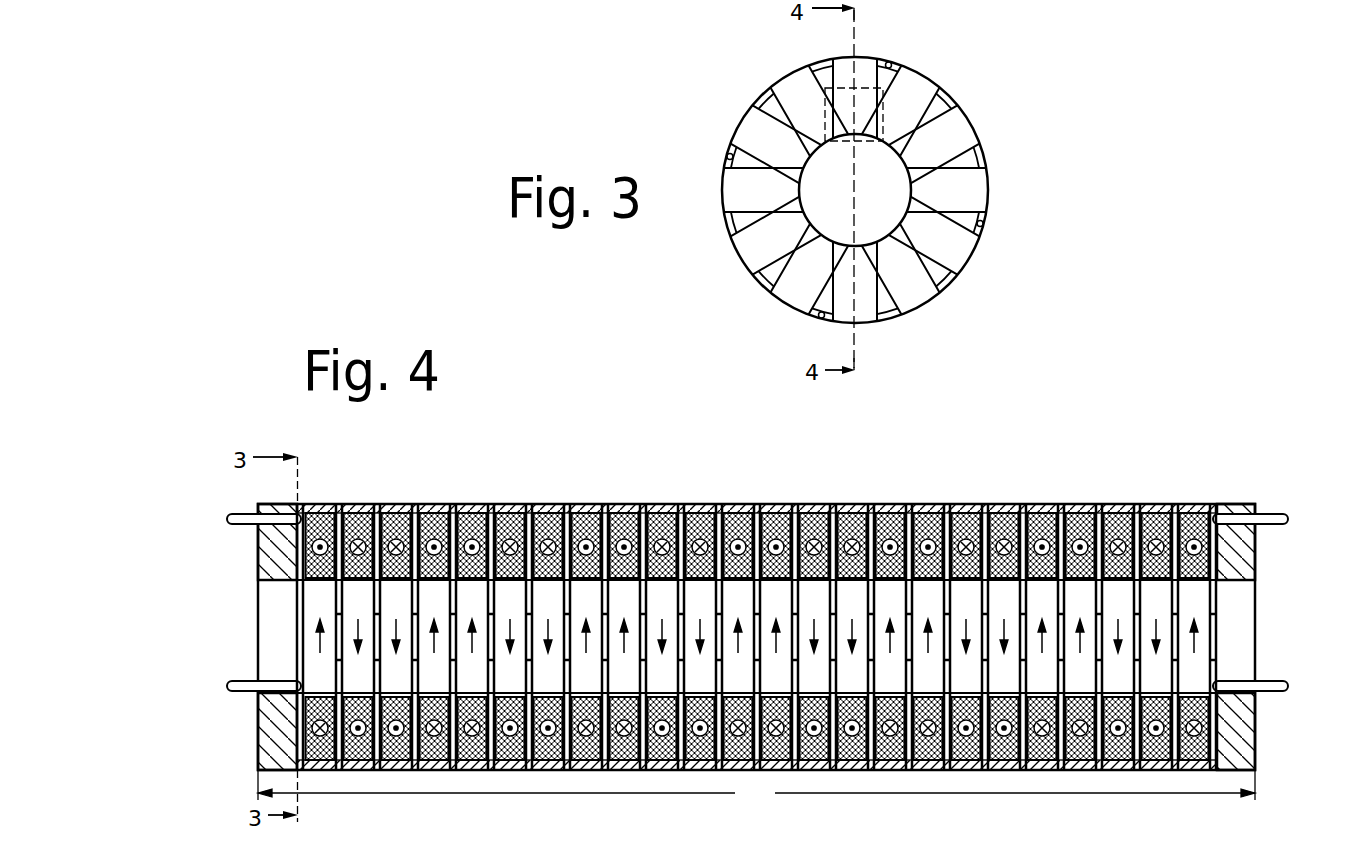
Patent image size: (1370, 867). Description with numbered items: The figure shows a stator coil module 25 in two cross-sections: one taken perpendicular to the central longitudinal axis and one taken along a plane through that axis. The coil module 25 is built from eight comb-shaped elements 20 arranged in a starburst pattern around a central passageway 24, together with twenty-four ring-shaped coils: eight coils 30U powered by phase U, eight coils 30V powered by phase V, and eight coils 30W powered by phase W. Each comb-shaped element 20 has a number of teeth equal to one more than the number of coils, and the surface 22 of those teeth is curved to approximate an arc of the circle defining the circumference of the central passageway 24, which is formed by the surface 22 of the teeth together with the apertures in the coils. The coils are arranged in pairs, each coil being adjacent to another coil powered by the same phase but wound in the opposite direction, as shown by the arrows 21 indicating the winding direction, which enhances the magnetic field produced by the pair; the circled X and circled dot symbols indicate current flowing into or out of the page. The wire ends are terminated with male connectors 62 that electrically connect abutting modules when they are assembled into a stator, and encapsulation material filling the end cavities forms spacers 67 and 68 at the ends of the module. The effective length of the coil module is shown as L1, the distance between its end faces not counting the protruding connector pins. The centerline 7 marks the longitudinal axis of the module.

In FIG. 3, the center axis 7 is at (850, 142).
In FIG. 3, the comb-shaped element 20 is at (866, 60).
In FIG. 4, the arrow 21 is at (313, 650).
In FIG. 3, the surface 22 is at (908, 188).
In FIG. 3, the central passageway 24 is at (822, 200).
In FIG. 4, the coil module 25 is at (716, 795).
In FIG. 3, the coil 30U is at (980, 138).
In FIG. 4, the coil 30U is at (323, 503).
In FIG. 4, the coil 30V is at (399, 503).
In FIG. 4, the coil 30W is at (475, 503).
In FIG. 3, the male connector 62 is at (903, 70).
In FIG. 4, the male connector 62 is at (244, 527).
In FIG. 4, the spacer 67 is at (272, 743).
In FIG. 4, the spacer 68 is at (1240, 735).
In FIG. 4, the effective length L1 is at (757, 795).